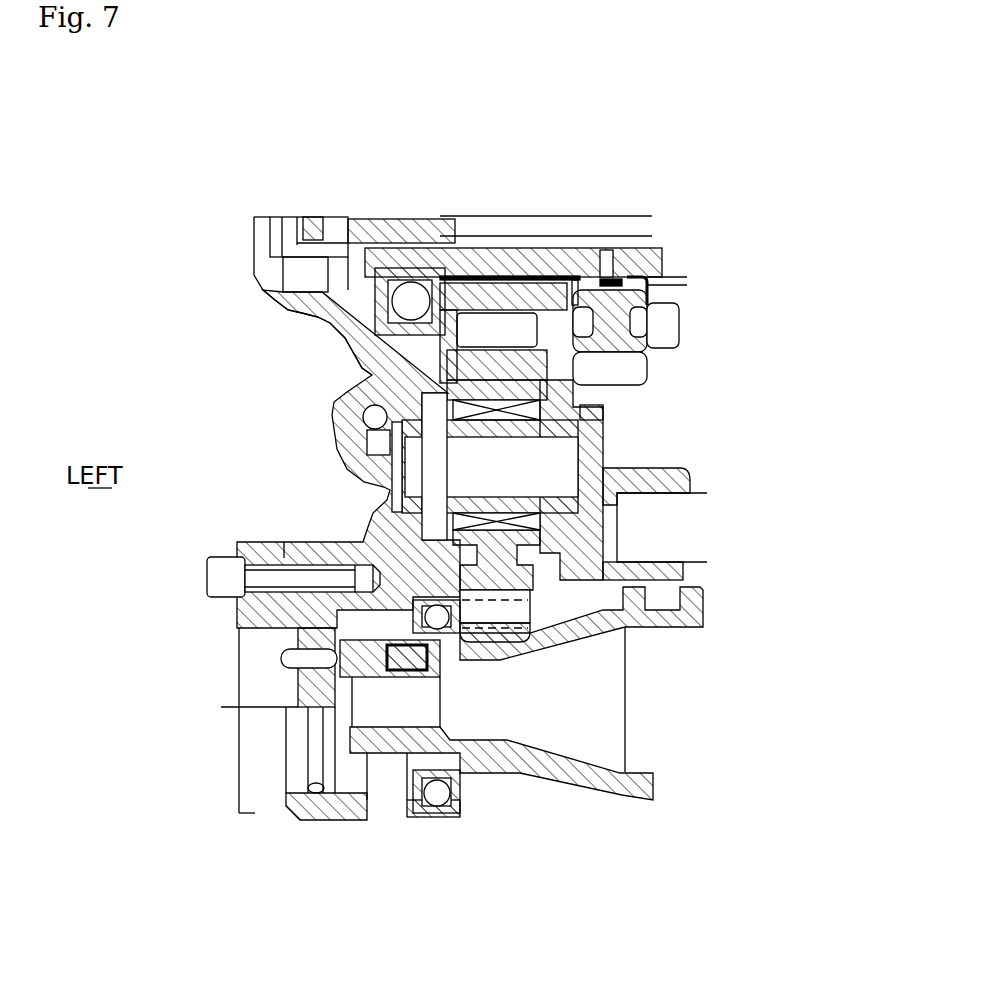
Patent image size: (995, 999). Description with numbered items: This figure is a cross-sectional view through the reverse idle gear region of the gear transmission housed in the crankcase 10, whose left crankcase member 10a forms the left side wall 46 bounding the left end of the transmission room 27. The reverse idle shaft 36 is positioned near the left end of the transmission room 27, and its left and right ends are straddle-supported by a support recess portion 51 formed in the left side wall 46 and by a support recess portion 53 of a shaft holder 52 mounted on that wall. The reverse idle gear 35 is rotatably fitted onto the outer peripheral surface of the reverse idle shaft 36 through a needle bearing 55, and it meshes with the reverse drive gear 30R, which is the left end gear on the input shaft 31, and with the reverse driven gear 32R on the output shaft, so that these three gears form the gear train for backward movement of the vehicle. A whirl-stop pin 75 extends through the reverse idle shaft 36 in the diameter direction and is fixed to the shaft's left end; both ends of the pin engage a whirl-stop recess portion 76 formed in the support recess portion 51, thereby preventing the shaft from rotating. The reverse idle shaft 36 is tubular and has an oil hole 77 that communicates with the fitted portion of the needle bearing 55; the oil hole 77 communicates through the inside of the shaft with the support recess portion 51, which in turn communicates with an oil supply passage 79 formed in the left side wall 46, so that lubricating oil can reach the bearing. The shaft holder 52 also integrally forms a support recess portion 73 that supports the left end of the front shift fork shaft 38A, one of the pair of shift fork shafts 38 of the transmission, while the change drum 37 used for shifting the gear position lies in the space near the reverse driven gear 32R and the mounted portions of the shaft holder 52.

The crankcase 10 is at (286, 286).
The left crankcase member 10a is at (249, 246).
The transmission room 27 is at (498, 808).
The reverse drive gear 30R is at (512, 330).
The input shaft 31 is at (608, 262).
The reverse driven gear 32R is at (540, 638).
The reverse idle gear 35 is at (540, 343).
The reverse idle shaft 36 is at (560, 505).
The change drum 37 is at (605, 780).
The shift fork shafts 38 is at (634, 652).
The cover portion 38A is at (705, 540).
The left side wall 46 is at (345, 345).
The support recess portion 51 is at (392, 508).
The shaft holder 52 is at (597, 412).
The support recess portion 53 is at (603, 437).
The needle bearing 55 is at (500, 515).
The support recess portion 73 is at (617, 515).
The whirl-stop pin 75 is at (436, 527).
The whirl-stop recess portion 76 is at (370, 522).
The oil hole 77 is at (494, 425).
The oil supply passage 79 is at (352, 408).